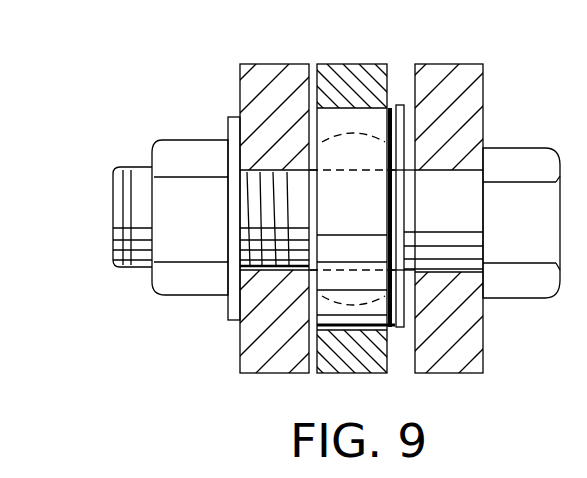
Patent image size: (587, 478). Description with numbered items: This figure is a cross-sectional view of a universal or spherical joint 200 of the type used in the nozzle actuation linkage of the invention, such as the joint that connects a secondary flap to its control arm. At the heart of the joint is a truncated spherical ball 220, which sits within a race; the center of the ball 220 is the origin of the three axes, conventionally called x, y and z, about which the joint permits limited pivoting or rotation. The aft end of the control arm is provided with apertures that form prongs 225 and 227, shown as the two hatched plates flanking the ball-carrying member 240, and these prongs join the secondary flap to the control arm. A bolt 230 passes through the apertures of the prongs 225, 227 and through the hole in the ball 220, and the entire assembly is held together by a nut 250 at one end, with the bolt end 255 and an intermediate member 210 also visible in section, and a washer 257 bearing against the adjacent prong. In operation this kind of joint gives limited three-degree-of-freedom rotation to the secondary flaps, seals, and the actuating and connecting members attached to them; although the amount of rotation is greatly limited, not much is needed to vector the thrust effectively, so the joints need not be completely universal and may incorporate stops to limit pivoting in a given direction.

The fastener assembly 200 is at (374, 51).
The locking sleeve 210 is at (396, 100).
The truncated spherical ball 220 is at (411, 205).
The prong 225 is at (463, 374).
The prong 227 is at (260, 374).
The bolt 230 is at (407, 130).
The intermediate member 240 is at (340, 374).
The nut 250 is at (161, 165).
The bolt head end 255 is at (115, 210).
The washer 257 is at (228, 127).